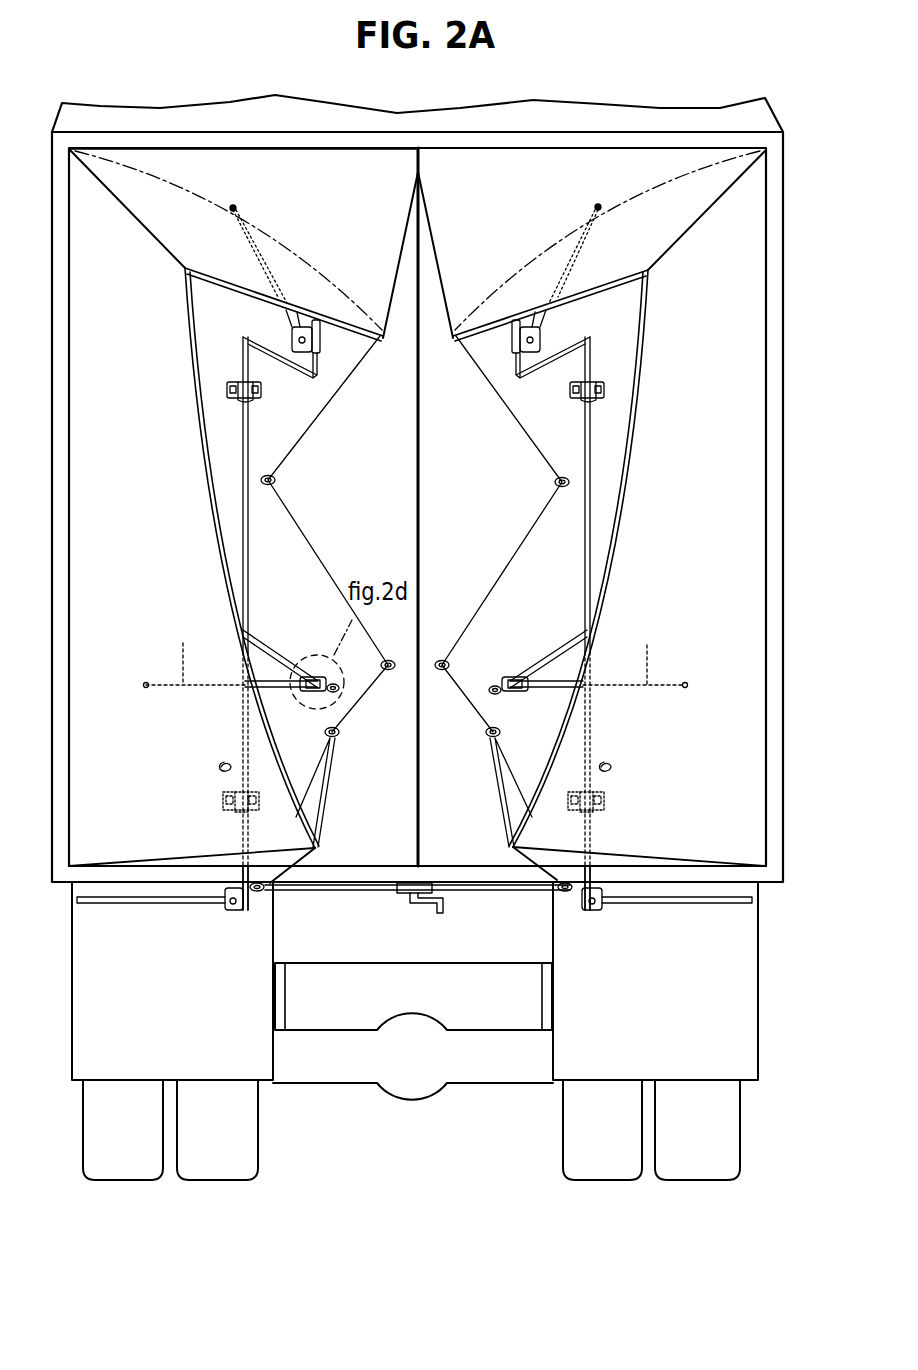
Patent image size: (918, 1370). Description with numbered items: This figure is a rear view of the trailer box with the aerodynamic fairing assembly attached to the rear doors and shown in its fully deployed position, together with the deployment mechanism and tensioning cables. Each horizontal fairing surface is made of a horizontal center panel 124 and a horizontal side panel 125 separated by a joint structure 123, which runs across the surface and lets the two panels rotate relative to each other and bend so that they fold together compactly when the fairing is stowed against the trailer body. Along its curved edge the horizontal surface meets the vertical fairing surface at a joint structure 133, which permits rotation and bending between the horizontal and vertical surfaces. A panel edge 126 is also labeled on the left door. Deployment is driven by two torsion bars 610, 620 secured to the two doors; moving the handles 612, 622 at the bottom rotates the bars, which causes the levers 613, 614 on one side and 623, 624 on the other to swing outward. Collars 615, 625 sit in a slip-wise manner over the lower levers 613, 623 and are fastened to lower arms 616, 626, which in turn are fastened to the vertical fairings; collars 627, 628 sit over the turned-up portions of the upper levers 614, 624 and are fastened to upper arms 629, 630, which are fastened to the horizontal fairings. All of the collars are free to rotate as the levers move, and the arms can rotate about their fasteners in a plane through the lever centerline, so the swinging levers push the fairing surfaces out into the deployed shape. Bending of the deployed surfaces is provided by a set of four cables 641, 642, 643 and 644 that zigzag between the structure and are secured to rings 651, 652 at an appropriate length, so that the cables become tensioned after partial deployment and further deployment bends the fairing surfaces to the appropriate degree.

The joint structure 123 is at (145, 170).
The horizontal center panel 124 is at (274, 167).
The horizontal side panel 125 is at (175, 218).
The joint structure 133 is at (162, 247).
The door panel top rail 126 is at (222, 290).
The upper arm 629 is at (262, 241).
The upper arm 630 is at (570, 240).
The collar 627 is at (326, 343).
The collar 628 is at (506, 343).
The lever 614 is at (298, 370).
The lever 624 is at (535, 370).
The cable 643 is at (322, 416).
The cable 644 is at (512, 423).
The torsion bar 610 is at (241, 529).
The torsion bar 620 is at (592, 530).
The lever 613 is at (277, 648).
The lever 623 is at (548, 650).
The collar 615 is at (330, 708).
The collar 625 is at (503, 677).
The lower arm 616 is at (195, 652).
The lower arm 626 is at (635, 653).
The cable 641 is at (323, 788).
The cable 642 is at (505, 788).
The ring 651 is at (258, 892).
The ring 652 is at (565, 892).
The handle 612 is at (172, 907).
The handle 622 is at (655, 907).